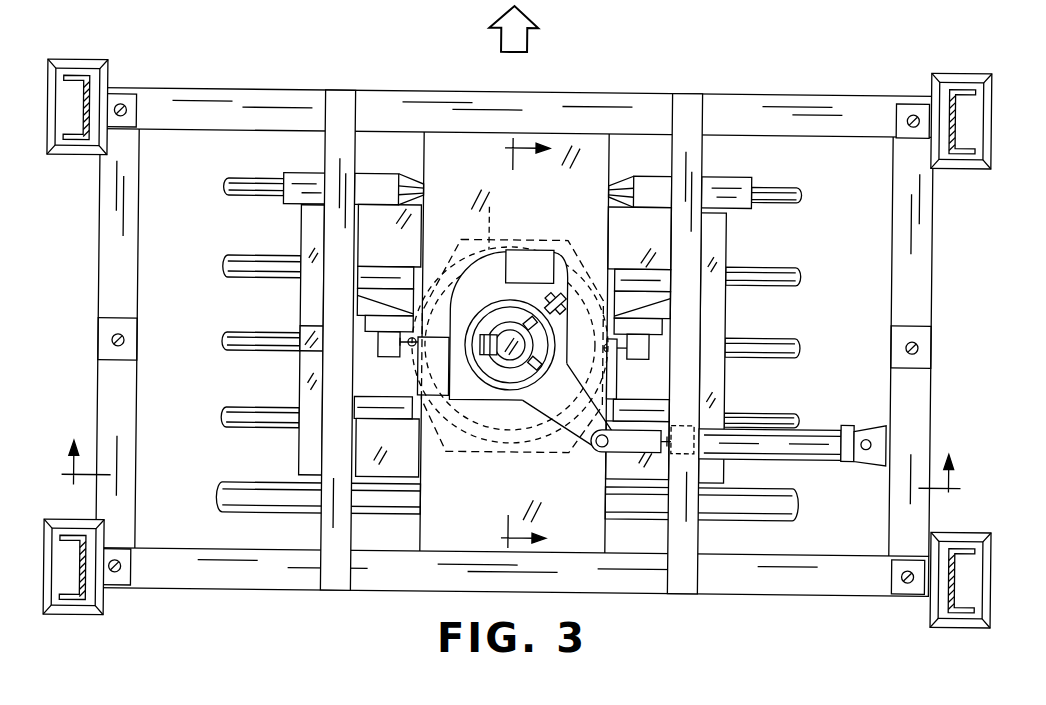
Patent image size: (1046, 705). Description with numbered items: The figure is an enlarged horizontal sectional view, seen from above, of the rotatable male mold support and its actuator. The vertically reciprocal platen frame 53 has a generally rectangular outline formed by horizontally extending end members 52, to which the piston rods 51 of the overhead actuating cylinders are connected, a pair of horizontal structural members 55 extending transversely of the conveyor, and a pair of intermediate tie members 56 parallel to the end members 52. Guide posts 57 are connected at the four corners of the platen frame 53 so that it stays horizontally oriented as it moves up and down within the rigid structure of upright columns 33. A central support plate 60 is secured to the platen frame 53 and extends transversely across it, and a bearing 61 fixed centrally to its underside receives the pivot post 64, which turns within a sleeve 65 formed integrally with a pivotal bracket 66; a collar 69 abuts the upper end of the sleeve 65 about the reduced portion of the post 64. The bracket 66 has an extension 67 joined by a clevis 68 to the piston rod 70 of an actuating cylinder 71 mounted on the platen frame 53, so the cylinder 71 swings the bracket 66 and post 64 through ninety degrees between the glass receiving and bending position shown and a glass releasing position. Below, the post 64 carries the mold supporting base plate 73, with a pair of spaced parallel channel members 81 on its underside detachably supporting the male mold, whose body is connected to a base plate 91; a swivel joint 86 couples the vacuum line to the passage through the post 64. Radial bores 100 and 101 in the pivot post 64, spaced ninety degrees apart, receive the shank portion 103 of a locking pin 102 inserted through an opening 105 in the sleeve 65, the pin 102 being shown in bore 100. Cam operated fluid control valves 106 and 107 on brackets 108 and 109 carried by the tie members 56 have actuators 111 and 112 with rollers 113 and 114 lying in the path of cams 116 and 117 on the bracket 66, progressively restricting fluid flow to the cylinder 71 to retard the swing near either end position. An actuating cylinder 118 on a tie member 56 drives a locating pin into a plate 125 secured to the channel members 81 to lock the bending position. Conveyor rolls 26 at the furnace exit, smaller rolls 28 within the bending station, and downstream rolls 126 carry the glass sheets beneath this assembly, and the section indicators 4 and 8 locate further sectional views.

The section line 4- 4 is at (509, 485).
The section line 8- 8 is at (510, 345).
The conveyor rolls 26 is at (238, 510).
The conveyor rolls 28 is at (245, 270).
The columns 33 is at (78, 80).
The piston rods 51 is at (113, 340).
The end members 52 is at (100, 250).
The platen frame 53 is at (285, 598).
The horizontal structural members 55 is at (400, 108).
The tie members 56 is at (337, 135).
The guide posts 57 is at (120, 107).
The central support plate 60 is at (438, 519).
The bearing 61 is at (510, 318).
The pivot post 64 is at (502, 327).
The sleeve 65 is at (503, 394).
The pivotal bracket 66 is at (450, 400).
The extension 67 is at (483, 483).
The clevis 68 is at (620, 443).
The collar 69 is at (517, 393).
The piston rod 70 is at (670, 443).
The actuating cylinder 71 is at (813, 448).
The mold supporting base plate 73 is at (413, 267).
The channel members 81 is at (717, 283).
The swivel joint 86 is at (500, 372).
The base plate 91 is at (717, 236).
The radial bore 100 is at (557, 345).
The radial bore 101 is at (543, 377).
The locking pin 102 is at (560, 300).
The shank portion 103 is at (530, 267).
The opening 105 is at (560, 253).
The cam operated fluid control valve 106 is at (378, 348).
The cam operated fluid control valve 107 is at (653, 333).
The bracket 108 is at (370, 297).
The bracket 109 is at (655, 312).
The actuator 111 is at (413, 368).
The actuator 112 is at (627, 353).
The roller 113 is at (414, 347).
The roller 114 is at (617, 387).
The cam 116 is at (422, 425).
The cam 117 is at (527, 252).
The actuating cylinder 118 is at (312, 333).
The plate 125 is at (310, 380).
The conveyor rolls 126 is at (240, 190).